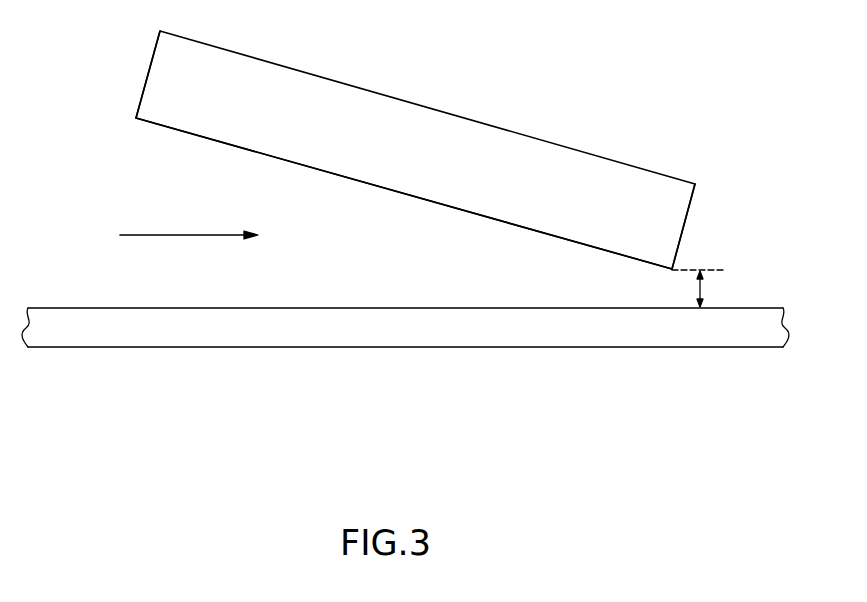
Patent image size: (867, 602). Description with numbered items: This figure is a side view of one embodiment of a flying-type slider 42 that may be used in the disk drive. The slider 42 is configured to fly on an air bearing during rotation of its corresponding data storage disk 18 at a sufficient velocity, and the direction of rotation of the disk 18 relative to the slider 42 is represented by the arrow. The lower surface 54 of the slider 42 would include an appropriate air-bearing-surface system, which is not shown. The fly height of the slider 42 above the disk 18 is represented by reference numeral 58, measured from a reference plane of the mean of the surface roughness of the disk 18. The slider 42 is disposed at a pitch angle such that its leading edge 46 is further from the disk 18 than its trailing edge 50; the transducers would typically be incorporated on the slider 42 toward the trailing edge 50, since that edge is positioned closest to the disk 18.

The data storage disk 18 is at (183, 308).
The slider 42 is at (420, 157).
The leading edge 46 is at (136, 113).
The trailing edge 50 is at (671, 271).
The lower surface 54 is at (217, 143).
The fly height 58 is at (703, 290).